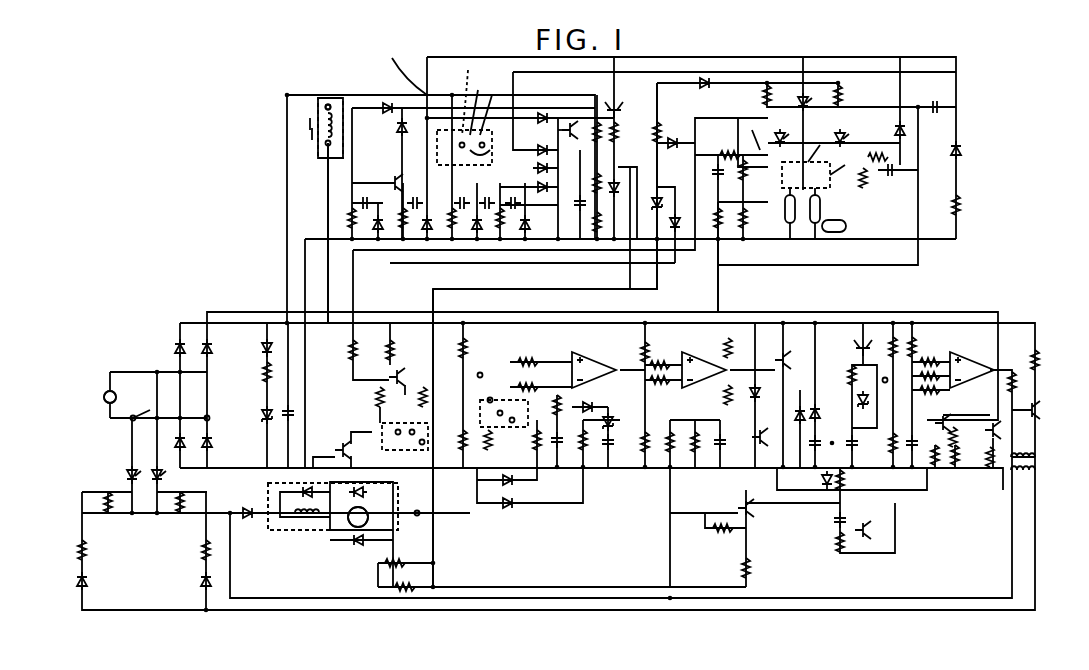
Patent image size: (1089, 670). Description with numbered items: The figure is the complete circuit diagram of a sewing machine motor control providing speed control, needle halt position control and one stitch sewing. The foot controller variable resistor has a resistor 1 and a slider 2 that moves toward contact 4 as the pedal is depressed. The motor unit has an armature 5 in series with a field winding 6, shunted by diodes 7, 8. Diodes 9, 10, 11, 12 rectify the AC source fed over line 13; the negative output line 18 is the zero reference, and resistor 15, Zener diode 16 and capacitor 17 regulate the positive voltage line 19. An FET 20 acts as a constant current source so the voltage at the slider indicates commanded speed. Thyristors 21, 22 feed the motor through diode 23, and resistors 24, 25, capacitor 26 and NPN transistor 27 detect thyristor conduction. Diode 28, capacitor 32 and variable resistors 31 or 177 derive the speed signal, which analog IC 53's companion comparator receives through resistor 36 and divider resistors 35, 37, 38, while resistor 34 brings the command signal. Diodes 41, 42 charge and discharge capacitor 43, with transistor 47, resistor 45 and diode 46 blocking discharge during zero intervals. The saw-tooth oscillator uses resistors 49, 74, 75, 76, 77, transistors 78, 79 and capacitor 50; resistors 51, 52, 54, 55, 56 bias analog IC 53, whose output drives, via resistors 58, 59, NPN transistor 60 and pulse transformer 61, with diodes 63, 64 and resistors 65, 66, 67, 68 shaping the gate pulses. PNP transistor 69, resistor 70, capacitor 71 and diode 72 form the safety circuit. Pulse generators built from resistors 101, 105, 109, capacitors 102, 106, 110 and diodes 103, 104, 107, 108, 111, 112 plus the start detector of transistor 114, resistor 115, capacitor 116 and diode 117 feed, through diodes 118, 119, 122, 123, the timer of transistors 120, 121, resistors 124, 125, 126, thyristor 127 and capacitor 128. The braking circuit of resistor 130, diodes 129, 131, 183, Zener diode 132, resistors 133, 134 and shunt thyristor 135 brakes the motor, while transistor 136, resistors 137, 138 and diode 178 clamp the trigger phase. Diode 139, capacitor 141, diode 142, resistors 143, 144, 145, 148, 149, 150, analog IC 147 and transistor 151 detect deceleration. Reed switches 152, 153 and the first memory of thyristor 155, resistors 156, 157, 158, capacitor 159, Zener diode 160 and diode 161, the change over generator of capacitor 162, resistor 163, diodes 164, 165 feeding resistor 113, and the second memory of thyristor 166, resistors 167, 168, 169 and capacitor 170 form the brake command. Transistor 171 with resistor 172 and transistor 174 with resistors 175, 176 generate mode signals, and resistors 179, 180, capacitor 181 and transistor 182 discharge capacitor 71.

The resistor 1 is at (325, 135).
The slider 2 is at (308, 123).
The contact 4 is at (330, 146).
The armature 5 is at (361, 509).
The field winding 6 is at (302, 508).
The diode 7 is at (351, 498).
The diode 8 is at (312, 496).
The diode 9 is at (172, 345).
The diode 10 is at (210, 352).
The diode 11 is at (213, 443).
The diode 12 is at (176, 444).
The line 13 is at (120, 372).
The resistor 15 is at (255, 372).
The Zener diode 16 is at (262, 415).
The capacitor 17 is at (284, 418).
The negative output line 18 is at (330, 245).
The positive voltage line 19 is at (384, 95).
The FET 20 is at (338, 448).
The thyristor 21 is at (163, 480).
The thyristor 22 is at (126, 478).
The diode 23 is at (247, 506).
The resistor 24 is at (667, 434).
The resistor 25 is at (690, 434).
The capacitor 26 is at (715, 433).
The NPN transistor 27 is at (754, 436).
The diode 28 is at (516, 488).
The variable resistor 31 is at (535, 443).
The capacitor 32 is at (575, 435).
The resistor 34 is at (528, 358).
The resistor 35 is at (530, 377).
The resistor 36 is at (550, 403).
The resistor 37 is at (469, 348).
The variable resistor 38 is at (465, 444).
The diode 41 is at (822, 397).
The diode 42 is at (795, 426).
The capacitor 43 is at (805, 450).
The resistor 45 is at (714, 370).
The diode 46 is at (746, 394).
The PNP transistor 47 is at (783, 357).
The resistor 49 is at (914, 335).
The capacitor 50 is at (912, 463).
The resistor 51 is at (892, 335).
The variable resistor 52 is at (883, 451).
The analog IC 53 is at (972, 362).
The resistor 54 is at (932, 357).
The resistor 55 is at (927, 388).
The resistor 56 is at (947, 396).
The resistor 58 is at (1018, 370).
The resistor 59 is at (1040, 360).
The NPN transistor 60 is at (1040, 404).
The pulse transformer 61 is at (1008, 470).
The diode 63 is at (88, 583).
The diode 64 is at (200, 583).
The resistor 65 is at (86, 551).
The resistor 66 is at (201, 553).
The resistor 67 is at (101, 508).
The resistor 68 is at (173, 508).
The PNP transistor 69 is at (858, 341).
The resistor 70 is at (861, 373).
The capacitor 71 is at (865, 463).
The diode 72 is at (869, 400).
The resistor 74 is at (1000, 422).
The resistor 75 is at (983, 469).
The resistor 76 is at (967, 428).
The resistor 77 is at (935, 468).
The transistor 78 is at (955, 471).
The transistor 79 is at (946, 420).
The resistor 101 is at (348, 213).
The capacitor 102 is at (355, 196).
The diode 103 is at (378, 240).
The diode 104 is at (528, 161).
The resistor 105 is at (452, 210).
The capacitor 106 is at (468, 198).
The diode 107 is at (490, 202).
The diode 108 is at (528, 181).
The resistor 109 is at (478, 250).
The capacitor 110 is at (520, 200).
The diode 111 is at (502, 250).
The diode 112 is at (528, 224).
The resistor 113 is at (573, 200).
The transistor 114 is at (386, 183).
The resistor 115 is at (405, 250).
The capacitor 116 is at (413, 199).
The diode 117 is at (430, 250).
The diode 118 is at (377, 117).
The diode 119 is at (400, 136).
The transistor 120 is at (620, 100).
The transistor 121 is at (584, 133).
The diode 122 is at (540, 112).
The diode 123 is at (570, 137).
The resistor 124 is at (593, 183).
The resistor 125 is at (593, 225).
The resistor 126 is at (622, 136).
The thyristor 127 is at (653, 147).
The capacitor 128 is at (624, 228).
The diode 129 is at (712, 93).
The resistor 130 is at (659, 115).
The diode 131 is at (670, 129).
The Zener diode 132 is at (660, 203).
The resistor 133 is at (394, 587).
The resistor 134 is at (405, 564).
The shunt thyristor 135 is at (358, 543).
The transistor 136 is at (744, 504).
The resistor 137 is at (718, 532).
The resistor 138 is at (742, 564).
The diode 139 is at (508, 509).
The capacitor 141 is at (626, 449).
The diode 142 is at (614, 443).
The resistor 143 is at (661, 351).
The resistor 144 is at (662, 372).
The resistor 145 is at (662, 391).
The analog IC 147 is at (718, 395).
The resistor 148 is at (713, 348).
The resistor 149 is at (720, 230).
The resistor 150 is at (746, 230).
The transistor 151 is at (779, 213).
The third reed switch 152 is at (848, 228).
The first reed switch 153 is at (829, 213).
The thyristor 155 is at (853, 135).
The resistor 156 is at (846, 96).
The resistor 157 is at (858, 183).
The resistor 158 is at (880, 150).
The capacitor 159 is at (896, 174).
The Zener diode 160 is at (895, 130).
The diode 161 is at (816, 109).
The capacitor 162 is at (932, 97).
The resistor 163 is at (962, 206).
The diode 164 is at (963, 150).
The diode 165 is at (528, 141).
The thyristor 166 is at (795, 137).
The resistor 167 is at (752, 97).
The resistor 168 is at (724, 143).
The resistor 169 is at (740, 183).
The capacitor 170 is at (713, 185).
The transistor 171 is at (435, 370).
The resistor 172 is at (392, 338).
The transistor 174 is at (389, 377).
The resistor 175 is at (356, 338).
The resistor 176 is at (375, 398).
The variable resistor 177 is at (490, 455).
The diode 178 is at (821, 483).
The resistor 179 is at (843, 488).
The resistor 180 is at (833, 541).
The capacitor 181 is at (833, 521).
The transistor 182 is at (873, 532).
The diode 183 is at (677, 235).